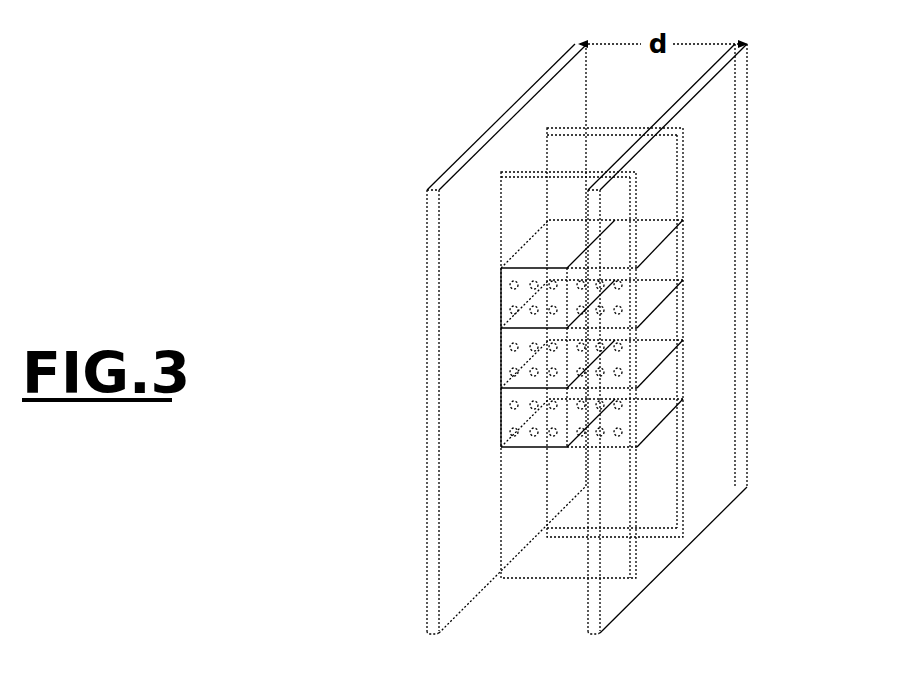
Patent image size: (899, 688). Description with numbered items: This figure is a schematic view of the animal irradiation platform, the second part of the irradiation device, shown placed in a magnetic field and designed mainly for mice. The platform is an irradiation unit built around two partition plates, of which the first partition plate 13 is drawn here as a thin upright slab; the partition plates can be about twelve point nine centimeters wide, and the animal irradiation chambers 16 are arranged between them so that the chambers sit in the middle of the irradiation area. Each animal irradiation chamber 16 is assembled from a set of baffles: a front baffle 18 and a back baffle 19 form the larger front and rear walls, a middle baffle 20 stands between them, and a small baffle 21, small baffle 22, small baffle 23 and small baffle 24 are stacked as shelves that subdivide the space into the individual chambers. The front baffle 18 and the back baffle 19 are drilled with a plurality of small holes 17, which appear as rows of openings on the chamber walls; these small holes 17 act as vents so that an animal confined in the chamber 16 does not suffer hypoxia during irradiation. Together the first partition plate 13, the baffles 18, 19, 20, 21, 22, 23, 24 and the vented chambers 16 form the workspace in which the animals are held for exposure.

The first partition plate 13 is at (427, 222).
The animal irradiation chamber 16 is at (537, 307).
The small holes 17 is at (748, 163).
The front baffle 18 is at (547, 130).
The back baffle 19 is at (501, 170).
The middle baffle 20 is at (583, 253).
The small baffle 21 is at (660, 243).
The small baffle 22 is at (660, 300).
The small baffle 23 is at (663, 358).
The small baffle 24 is at (663, 420).